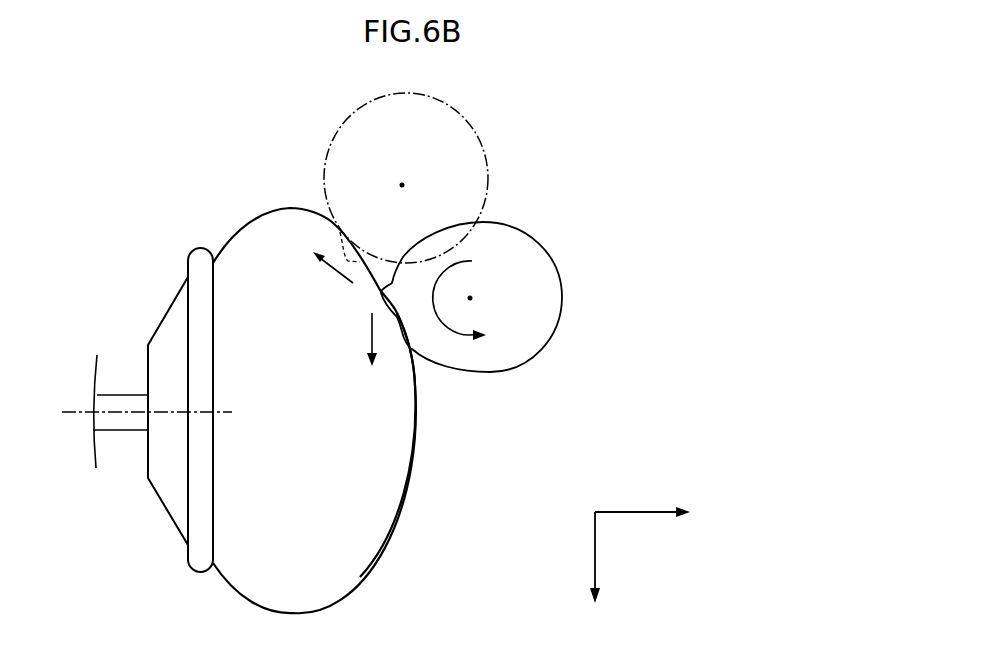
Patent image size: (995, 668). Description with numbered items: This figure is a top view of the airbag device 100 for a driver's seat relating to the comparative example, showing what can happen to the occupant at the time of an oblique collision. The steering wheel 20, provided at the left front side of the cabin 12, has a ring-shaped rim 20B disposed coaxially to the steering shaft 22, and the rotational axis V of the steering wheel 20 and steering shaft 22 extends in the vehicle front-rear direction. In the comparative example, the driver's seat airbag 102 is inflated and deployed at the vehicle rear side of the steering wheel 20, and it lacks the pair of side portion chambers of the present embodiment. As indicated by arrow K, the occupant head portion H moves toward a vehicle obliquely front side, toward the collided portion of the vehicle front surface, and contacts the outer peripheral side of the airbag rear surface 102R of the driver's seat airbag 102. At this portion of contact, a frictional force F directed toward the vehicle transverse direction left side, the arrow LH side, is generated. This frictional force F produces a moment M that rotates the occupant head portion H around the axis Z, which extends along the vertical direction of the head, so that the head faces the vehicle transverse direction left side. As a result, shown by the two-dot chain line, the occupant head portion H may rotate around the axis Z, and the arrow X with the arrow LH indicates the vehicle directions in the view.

The airbag device for a driver's seat 100 is at (129, 267).
The steering wheel 20 is at (182, 582).
The rim 20B is at (200, 562).
The steering shaft 22 is at (122, 422).
The driver's seat airbag 102 is at (247, 211).
The airbag rear surface 102R is at (413, 450).
The cabin 12 is at (625, 187).
The occupant head portion H is at (463, 113).
The axis Z is at (407, 186).
The arrow K is at (335, 275).
The frictional force F is at (370, 330).
The moment M is at (450, 330).
The rotational axis V is at (73, 412).
The vehicle longitudinal direction X is at (651, 513).
The arrow LH is at (597, 572).